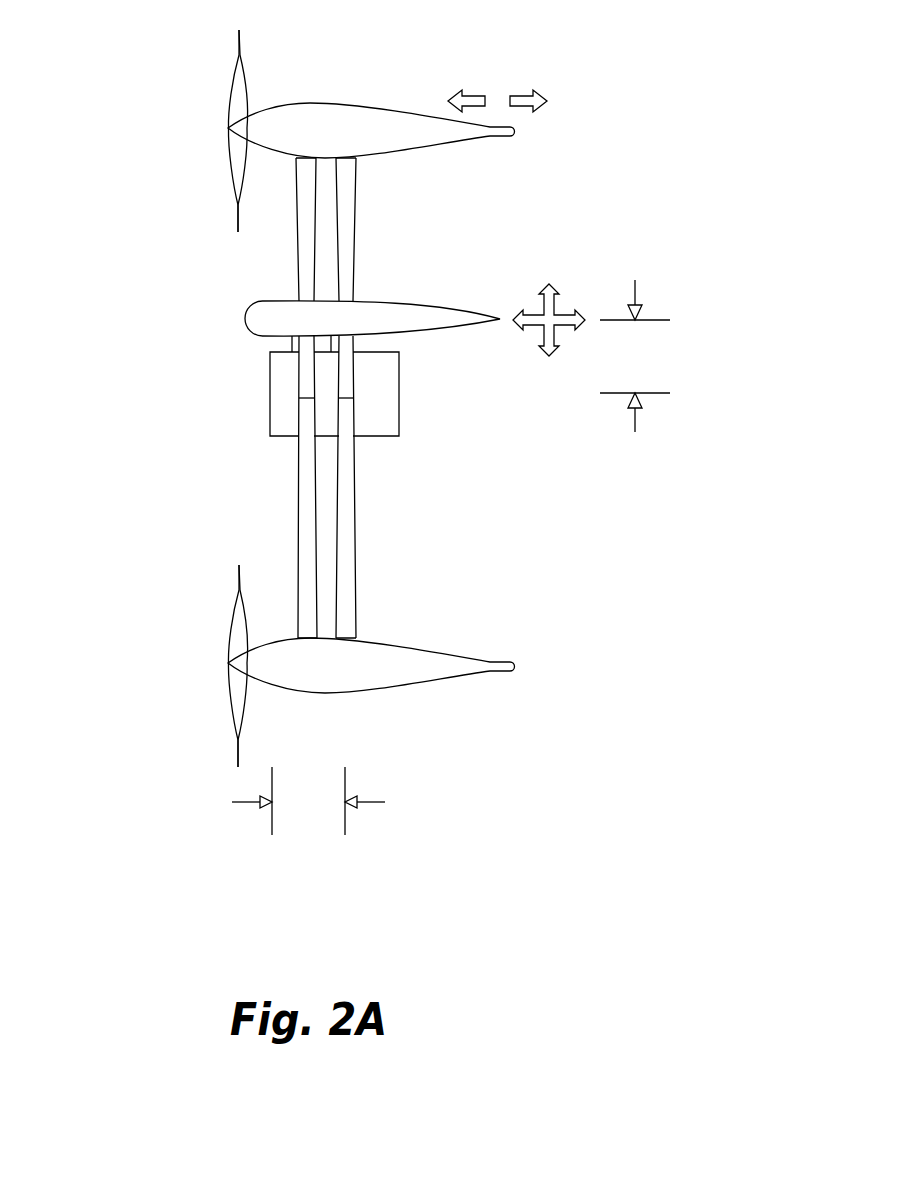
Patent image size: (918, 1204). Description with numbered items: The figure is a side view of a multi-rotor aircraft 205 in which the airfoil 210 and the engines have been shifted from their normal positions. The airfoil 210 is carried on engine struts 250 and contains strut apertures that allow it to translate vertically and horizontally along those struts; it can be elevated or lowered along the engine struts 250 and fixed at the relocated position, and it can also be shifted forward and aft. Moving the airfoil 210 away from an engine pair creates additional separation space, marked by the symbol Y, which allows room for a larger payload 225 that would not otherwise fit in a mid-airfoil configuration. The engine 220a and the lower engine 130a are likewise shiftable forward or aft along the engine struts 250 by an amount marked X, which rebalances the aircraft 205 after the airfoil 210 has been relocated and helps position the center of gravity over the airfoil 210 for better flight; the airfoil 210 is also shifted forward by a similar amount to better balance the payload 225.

The multi-rotor aircraft 205 is at (120, 117).
The engine 220a is at (327, 113).
The lower propulsor nacelle 130a is at (410, 670).
The airfoil 210 is at (393, 313).
The payload 225 is at (390, 397).
The engine struts 250 is at (303, 267).